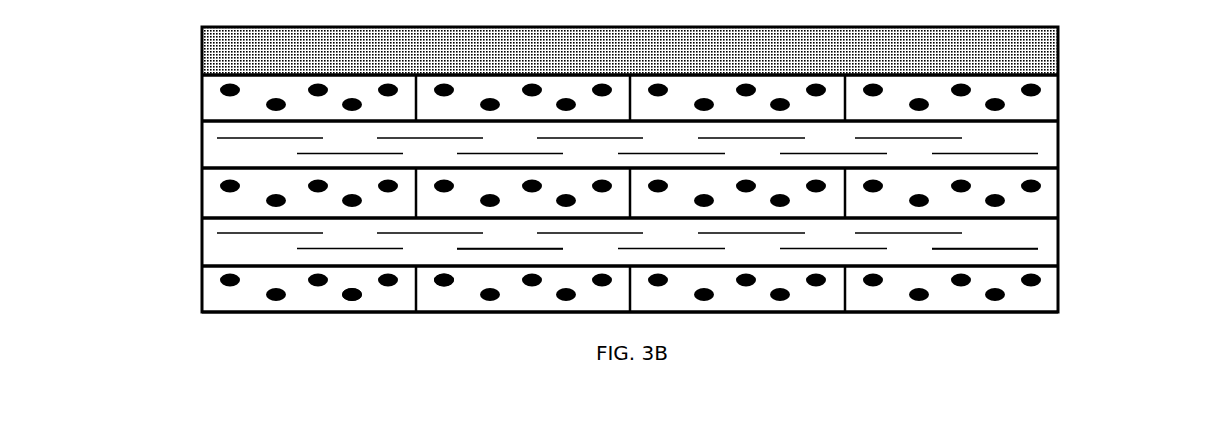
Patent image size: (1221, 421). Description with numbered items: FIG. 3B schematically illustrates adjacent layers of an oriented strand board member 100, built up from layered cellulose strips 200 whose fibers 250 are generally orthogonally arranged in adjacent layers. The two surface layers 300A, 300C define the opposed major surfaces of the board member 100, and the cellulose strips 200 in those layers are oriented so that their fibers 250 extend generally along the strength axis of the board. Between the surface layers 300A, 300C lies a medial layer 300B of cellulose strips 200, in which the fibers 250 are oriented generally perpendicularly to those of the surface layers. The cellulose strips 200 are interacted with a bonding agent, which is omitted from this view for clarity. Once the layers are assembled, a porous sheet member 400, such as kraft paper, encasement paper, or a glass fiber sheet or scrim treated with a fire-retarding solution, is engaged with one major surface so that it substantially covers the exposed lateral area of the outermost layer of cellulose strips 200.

The board member 100 is at (215, 325).
The cellulose strips 200 is at (987, 255).
The fibers 250 is at (558, 252).
The surface layer 300A is at (1080, 75).
The medial layer 300B is at (1080, 121).
The surface layer 300C is at (1080, 262).
The porous sheet member 400 is at (1080, 27).